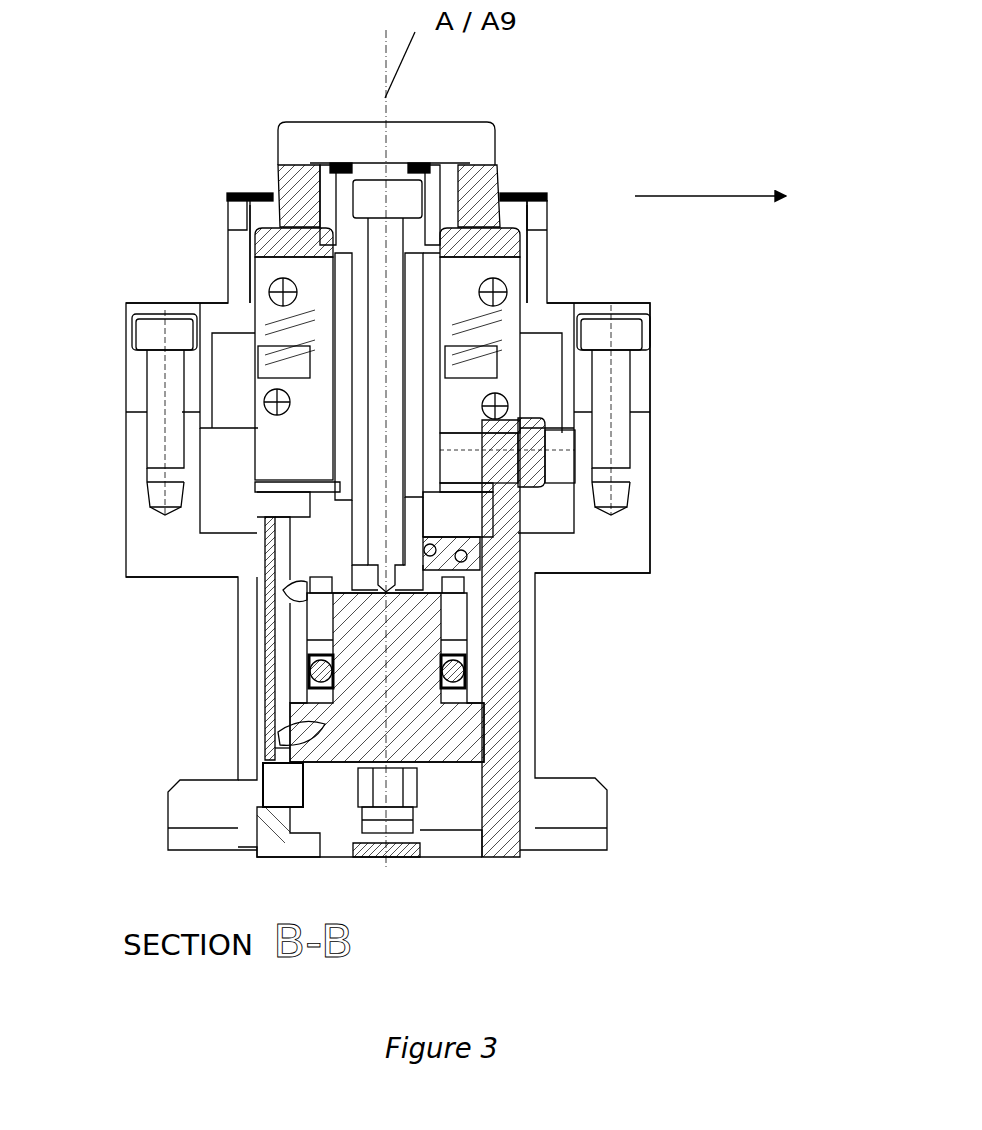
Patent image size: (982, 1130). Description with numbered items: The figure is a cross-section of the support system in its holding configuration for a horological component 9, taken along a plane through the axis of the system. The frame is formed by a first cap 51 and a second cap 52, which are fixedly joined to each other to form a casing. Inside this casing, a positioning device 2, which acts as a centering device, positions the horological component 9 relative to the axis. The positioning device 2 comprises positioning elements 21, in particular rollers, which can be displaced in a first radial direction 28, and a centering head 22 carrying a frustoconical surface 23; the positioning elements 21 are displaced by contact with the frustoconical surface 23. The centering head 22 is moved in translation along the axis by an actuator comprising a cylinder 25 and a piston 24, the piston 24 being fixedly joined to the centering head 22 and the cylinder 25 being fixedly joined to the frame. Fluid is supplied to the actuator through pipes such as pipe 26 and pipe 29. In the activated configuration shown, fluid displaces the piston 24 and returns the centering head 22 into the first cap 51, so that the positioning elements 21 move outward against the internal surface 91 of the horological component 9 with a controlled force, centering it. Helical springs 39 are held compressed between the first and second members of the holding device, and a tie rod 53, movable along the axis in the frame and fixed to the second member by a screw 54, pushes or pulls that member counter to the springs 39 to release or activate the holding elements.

The positioning device 2 is at (241, 143).
The horological component 9 is at (520, 196).
The positioning elements 21 is at (492, 162).
The centering head 22 is at (323, 172).
The frustoconical surface 23 is at (465, 212).
The piston 24 is at (440, 655).
The cylinder 25 is at (470, 707).
The pipe 26 is at (280, 668).
The first radial direction 28 is at (722, 196).
The pipe 29 is at (398, 843).
The helical springs 39 is at (522, 333).
The first cap 51 is at (640, 385).
The second cap 52 is at (630, 535).
The tie rod 53 is at (498, 782).
The screw 54 is at (528, 464).
The internal surface 91 is at (503, 192).